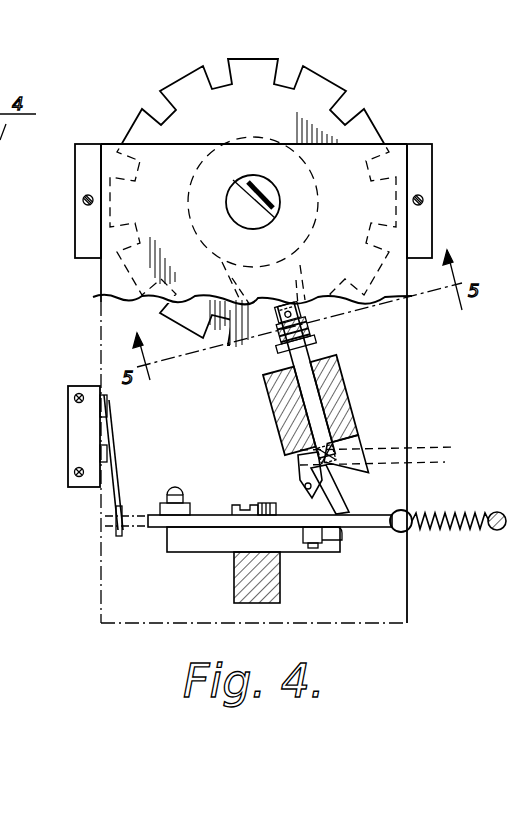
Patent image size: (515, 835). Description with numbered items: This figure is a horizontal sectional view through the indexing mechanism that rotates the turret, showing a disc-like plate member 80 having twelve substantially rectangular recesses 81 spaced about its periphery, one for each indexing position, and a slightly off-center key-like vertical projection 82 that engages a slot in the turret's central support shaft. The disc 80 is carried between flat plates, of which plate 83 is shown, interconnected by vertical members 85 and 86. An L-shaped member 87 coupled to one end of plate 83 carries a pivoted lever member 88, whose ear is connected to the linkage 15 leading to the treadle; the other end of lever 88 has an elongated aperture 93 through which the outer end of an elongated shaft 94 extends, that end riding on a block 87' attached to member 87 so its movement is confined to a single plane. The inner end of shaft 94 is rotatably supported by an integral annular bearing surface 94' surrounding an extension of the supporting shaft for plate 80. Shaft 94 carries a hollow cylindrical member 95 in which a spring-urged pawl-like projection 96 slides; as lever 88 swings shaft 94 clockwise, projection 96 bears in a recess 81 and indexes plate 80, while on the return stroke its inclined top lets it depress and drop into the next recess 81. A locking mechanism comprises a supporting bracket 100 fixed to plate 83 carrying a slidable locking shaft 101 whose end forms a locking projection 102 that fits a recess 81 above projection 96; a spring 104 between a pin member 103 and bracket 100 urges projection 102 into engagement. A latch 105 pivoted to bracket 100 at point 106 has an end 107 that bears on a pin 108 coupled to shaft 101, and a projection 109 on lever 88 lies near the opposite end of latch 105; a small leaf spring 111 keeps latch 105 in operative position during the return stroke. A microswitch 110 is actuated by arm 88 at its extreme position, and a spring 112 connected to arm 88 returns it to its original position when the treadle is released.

The disc-like plate member 80 is at (312, 78).
The recesses 81 is at (168, 72).
The key-like vertical projection 82 is at (265, 192).
The flat plate 83 is at (100, 296).
The vertical member 85 is at (432, 222).
The vertical member 86 is at (76, 222).
The L-shaped member 87 is at (280, 544).
The block 87' is at (275, 580).
The lever member 88 is at (104, 522).
The elongated aperture 93 is at (336, 545).
The elongated shaft 94 is at (331, 408).
The annular bearing surface 94' is at (269, 218).
The cylindrical member 95 is at (287, 298).
The pawl-like projection 96 is at (300, 300).
The supporting bracket 100 is at (340, 377).
The locking shaft 101 is at (320, 397).
The locking projection 102 is at (318, 327).
The pin member 103 is at (312, 343).
The spring 104 is at (268, 362).
The latch 105 is at (296, 458).
The pivot point 106 is at (298, 482).
The end of latch 107 is at (365, 452).
The pin 108 is at (386, 459).
The projection 109 is at (300, 548).
The microswitch 110 is at (70, 451).
The leaf spring 111 is at (266, 458).
The spring 112 is at (460, 512).
The linkage 15 is at (172, 487).